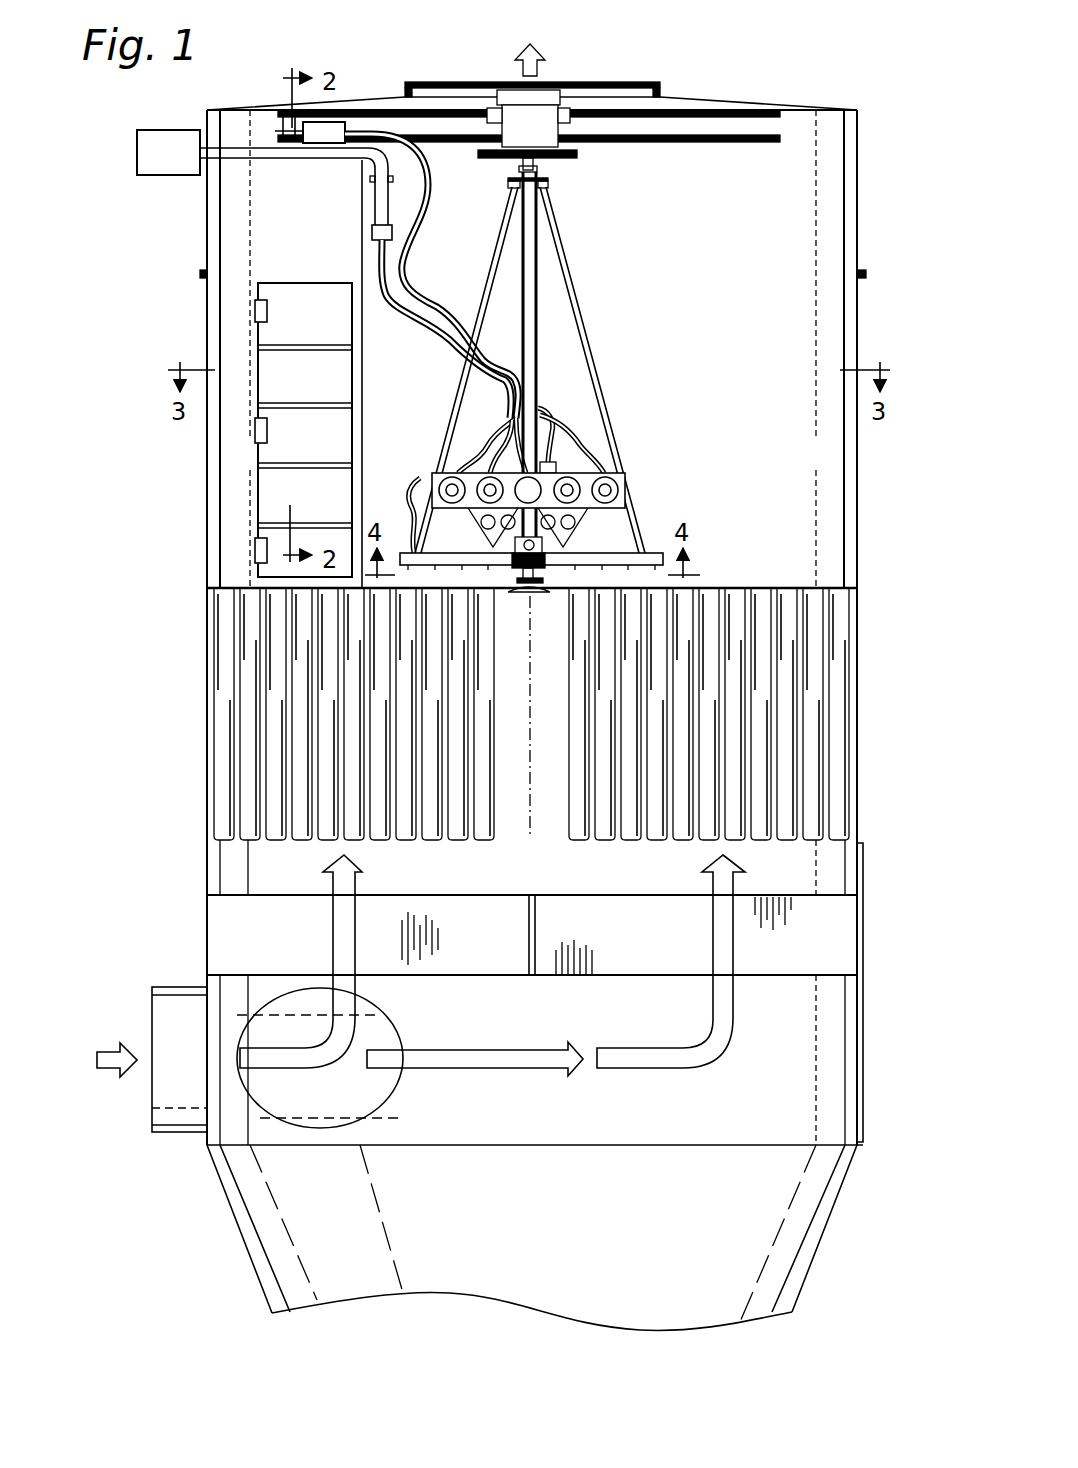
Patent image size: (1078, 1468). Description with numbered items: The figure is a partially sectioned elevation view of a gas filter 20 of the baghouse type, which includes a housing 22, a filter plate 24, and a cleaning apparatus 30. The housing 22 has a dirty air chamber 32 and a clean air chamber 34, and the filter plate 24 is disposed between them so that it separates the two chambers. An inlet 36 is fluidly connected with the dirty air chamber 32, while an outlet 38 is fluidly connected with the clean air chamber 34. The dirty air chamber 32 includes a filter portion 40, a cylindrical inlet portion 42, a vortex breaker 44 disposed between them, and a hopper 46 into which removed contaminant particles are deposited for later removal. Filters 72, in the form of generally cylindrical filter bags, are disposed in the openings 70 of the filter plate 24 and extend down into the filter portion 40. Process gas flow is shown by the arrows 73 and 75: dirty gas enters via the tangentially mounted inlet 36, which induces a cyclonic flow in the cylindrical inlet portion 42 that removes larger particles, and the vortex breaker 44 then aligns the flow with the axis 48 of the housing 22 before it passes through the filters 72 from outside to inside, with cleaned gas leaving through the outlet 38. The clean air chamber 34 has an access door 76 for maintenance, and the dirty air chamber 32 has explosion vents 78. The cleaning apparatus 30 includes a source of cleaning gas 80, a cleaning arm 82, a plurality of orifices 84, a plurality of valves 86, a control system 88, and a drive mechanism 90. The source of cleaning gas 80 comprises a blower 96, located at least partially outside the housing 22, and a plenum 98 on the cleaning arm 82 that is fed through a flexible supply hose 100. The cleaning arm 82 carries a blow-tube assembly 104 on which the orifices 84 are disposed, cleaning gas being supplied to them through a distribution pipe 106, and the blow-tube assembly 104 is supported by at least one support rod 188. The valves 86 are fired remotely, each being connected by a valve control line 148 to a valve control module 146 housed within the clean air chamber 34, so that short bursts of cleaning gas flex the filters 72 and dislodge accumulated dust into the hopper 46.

The gas filter 20 is at (100, 113).
The housing 22 is at (858, 346).
The filter plate 24 is at (830, 584).
The cleaning apparatus 30 is at (106, 161).
The dirty air chamber 32 is at (832, 862).
The clean air chamber 34 is at (795, 406).
The inlet 36 is at (302, 1128).
The outlet 38 is at (620, 76).
The filter portion 40 is at (864, 700).
The cylindrical inlet portion 42 is at (873, 1076).
The vortex breaker 44 is at (551, 978).
The hopper 46 is at (803, 1260).
The axis 48 is at (526, 785).
The openings 70 is at (713, 582).
The filters 72 is at (630, 842).
The arrows 73 is at (107, 1079).
The arrows 75 is at (536, 72).
The access door 76 is at (311, 300).
The explosion vents 78 is at (866, 1002).
The source of cleaning gas 80 is at (154, 234).
The cleaning arm 82 is at (676, 383).
The orifices 84 is at (586, 577).
The valves 86 is at (488, 503).
The control system 88 is at (378, 63).
The drive mechanism 90 is at (562, 168).
The blower 96 is at (265, 185).
The plenum 98 is at (604, 464).
The supply hose 100 is at (436, 323).
The blow-tube assembly 104 is at (658, 552).
The distribution pipe 106 is at (422, 480).
The valve control module 146 is at (325, 140).
The valve control line 148 is at (490, 426).
The support rod 188 is at (590, 326).